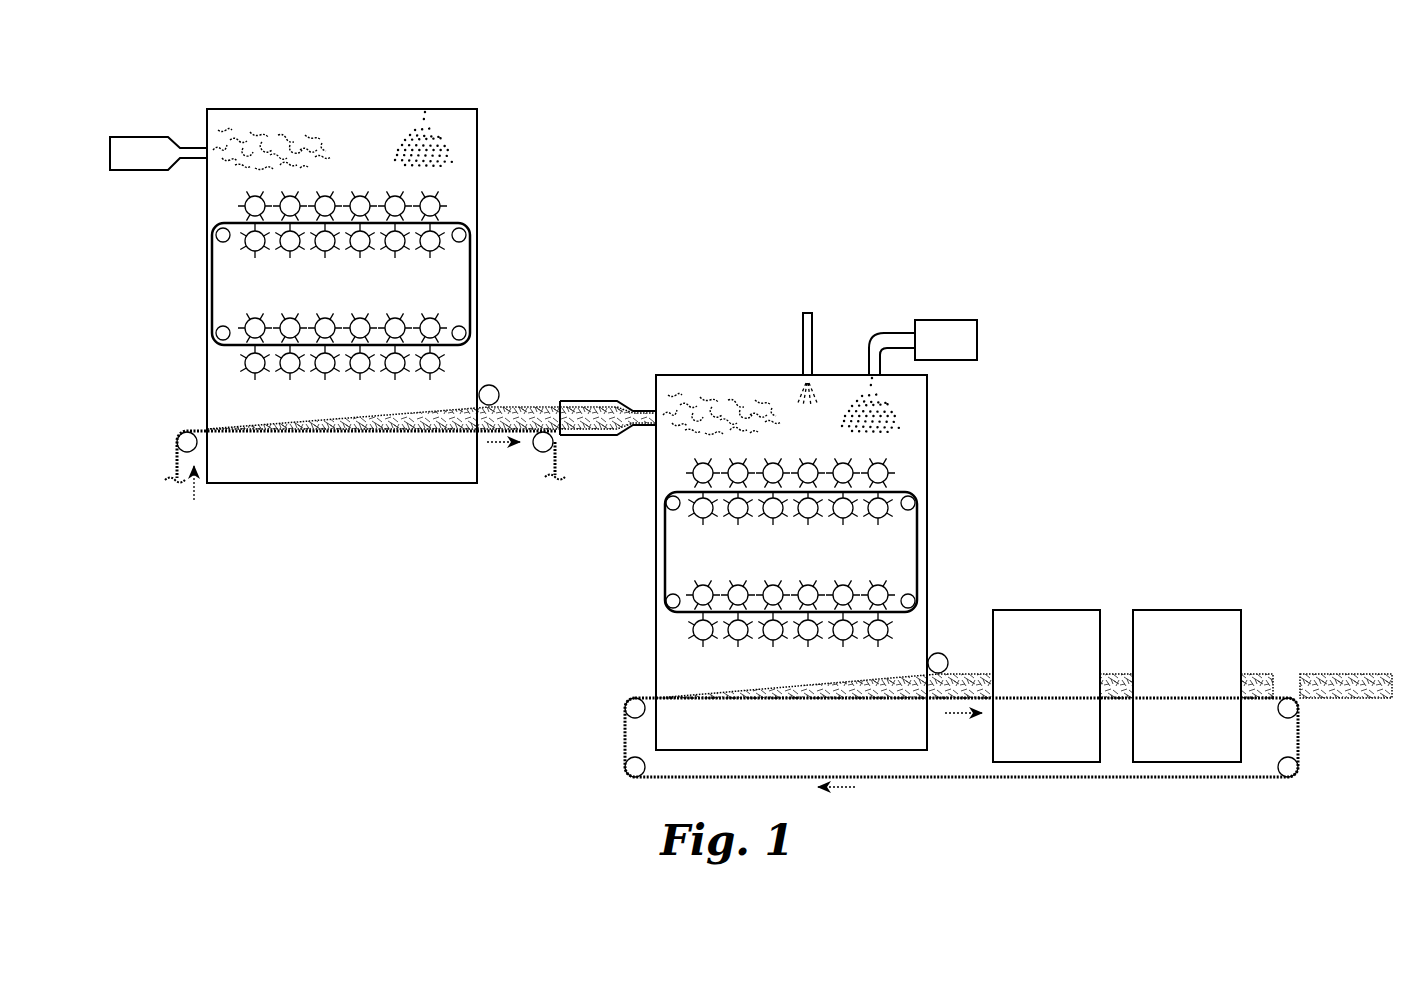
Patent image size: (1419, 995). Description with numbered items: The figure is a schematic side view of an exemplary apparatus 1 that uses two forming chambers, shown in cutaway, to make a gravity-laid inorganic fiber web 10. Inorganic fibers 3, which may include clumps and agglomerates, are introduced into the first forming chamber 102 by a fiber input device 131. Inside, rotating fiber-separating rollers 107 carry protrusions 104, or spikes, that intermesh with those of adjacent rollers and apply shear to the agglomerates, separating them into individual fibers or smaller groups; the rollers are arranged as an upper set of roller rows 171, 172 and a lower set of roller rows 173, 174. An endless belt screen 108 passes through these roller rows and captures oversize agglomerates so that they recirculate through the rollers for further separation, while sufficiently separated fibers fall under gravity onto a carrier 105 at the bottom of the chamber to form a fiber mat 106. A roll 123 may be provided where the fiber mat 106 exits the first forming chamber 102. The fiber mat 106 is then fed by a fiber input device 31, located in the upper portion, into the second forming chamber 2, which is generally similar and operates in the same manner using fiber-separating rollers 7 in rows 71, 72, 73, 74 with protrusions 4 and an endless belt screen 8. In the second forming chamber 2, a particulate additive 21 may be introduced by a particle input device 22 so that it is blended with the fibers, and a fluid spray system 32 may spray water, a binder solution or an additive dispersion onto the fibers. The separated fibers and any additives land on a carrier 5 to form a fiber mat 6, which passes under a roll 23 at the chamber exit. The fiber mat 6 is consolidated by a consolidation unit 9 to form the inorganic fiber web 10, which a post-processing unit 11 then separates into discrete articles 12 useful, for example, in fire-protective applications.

The apparatus 1 is at (1092, 317).
The second forming chamber 2 is at (982, 421).
The inorganic fibers 3 is at (267, 120).
The protrusions 4 is at (723, 530).
The carrier 5 is at (625, 725).
The fiber mat 6 is at (980, 675).
The fiber-separating rollers 7 is at (668, 517).
The endless belt screen 8 is at (663, 572).
The consolidation unit 9 is at (1045, 620).
The inorganic fiber web 10 is at (1108, 680).
The post-processing unit 11 is at (1175, 620).
The articles 12 is at (1367, 644).
The particulate additive 21 is at (880, 400).
The particle input device 22 is at (886, 340).
The roll 23 is at (927, 663).
The fiber input device 31 is at (586, 436).
The fluid spray system 32 is at (803, 343).
The roller row 71 is at (889, 470).
The roller row 72 is at (890, 516).
The roller row 73 is at (890, 591).
The roller row 74 is at (890, 626).
The first forming chamber 102 is at (502, 124).
The protrusions 104 is at (268, 265).
The carrier 105 is at (176, 468).
The fiber mat 106 is at (540, 406).
The fiber-separating rollers 107 is at (206, 251).
The endless belt screen 108 is at (211, 305).
The roll 123 is at (478, 395).
The fiber input device 131 is at (133, 171).
The roller row 171 is at (447, 203).
The roller row 172 is at (443, 247).
The roller row 173 is at (445, 323).
The roller row 174 is at (445, 362).